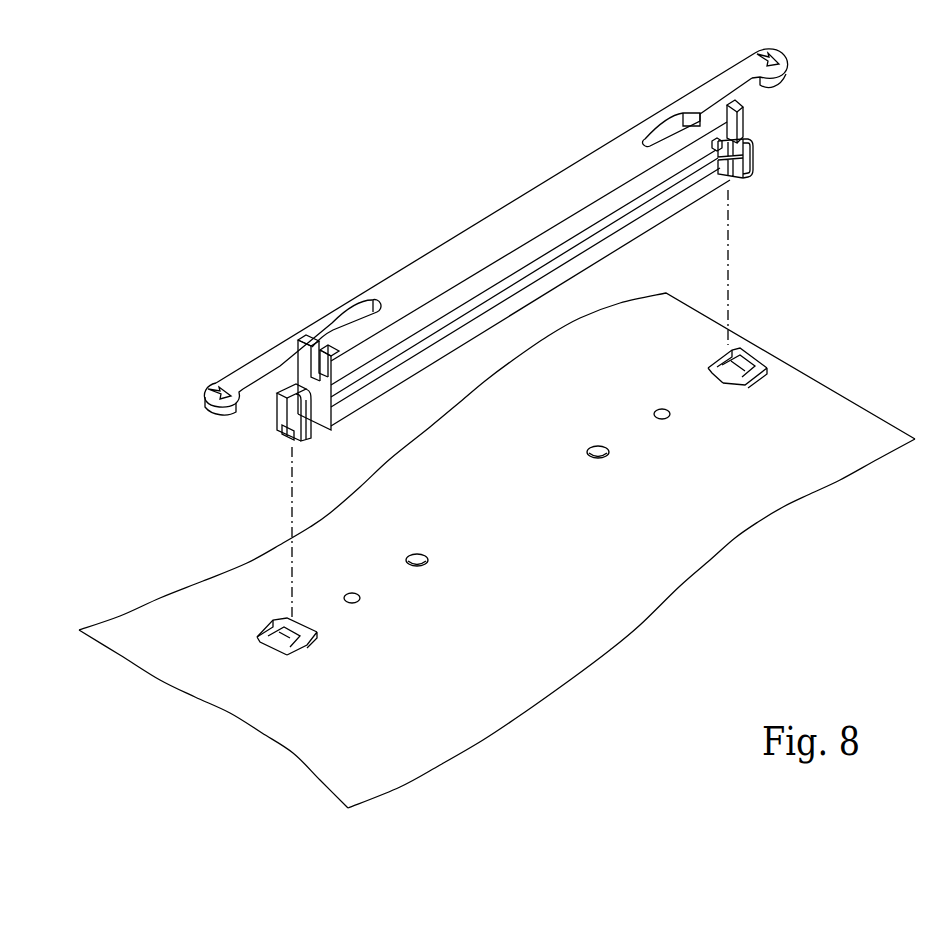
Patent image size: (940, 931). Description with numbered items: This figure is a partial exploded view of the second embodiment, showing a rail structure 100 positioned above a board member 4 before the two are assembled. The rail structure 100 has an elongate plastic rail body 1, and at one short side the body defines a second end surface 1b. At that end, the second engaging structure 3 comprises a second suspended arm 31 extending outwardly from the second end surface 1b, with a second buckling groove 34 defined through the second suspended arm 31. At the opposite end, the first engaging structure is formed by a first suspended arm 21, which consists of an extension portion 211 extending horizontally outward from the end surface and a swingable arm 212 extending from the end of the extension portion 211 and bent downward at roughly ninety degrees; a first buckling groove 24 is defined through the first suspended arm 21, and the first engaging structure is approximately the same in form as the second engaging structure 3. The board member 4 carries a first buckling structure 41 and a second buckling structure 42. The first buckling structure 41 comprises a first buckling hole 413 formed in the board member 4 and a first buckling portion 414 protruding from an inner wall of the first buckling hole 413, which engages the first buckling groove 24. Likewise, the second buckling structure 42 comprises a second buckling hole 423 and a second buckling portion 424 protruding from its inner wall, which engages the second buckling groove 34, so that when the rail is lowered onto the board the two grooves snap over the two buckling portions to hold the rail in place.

The rail structure 100 is at (446, 236).
The rail body 1 is at (532, 193).
The second end surface 1b is at (748, 111).
The second engaging structure 3 is at (753, 172).
The second suspended arm 31 is at (750, 155).
The second buckling groove 34 is at (737, 178).
The first suspended arm 21 is at (120, 463).
The extension portion 211 is at (283, 388).
The swingable arm 212 is at (285, 414).
The first buckling groove 24 is at (288, 440).
The board member 4 is at (537, 572).
The first buckling structure 41 is at (170, 761).
The first buckling hole 413 is at (297, 650).
The first buckling portion 414 is at (282, 637).
The second buckling structure 42 is at (827, 296).
The second buckling hole 423 is at (758, 375).
The second buckling portion 424 is at (740, 365).